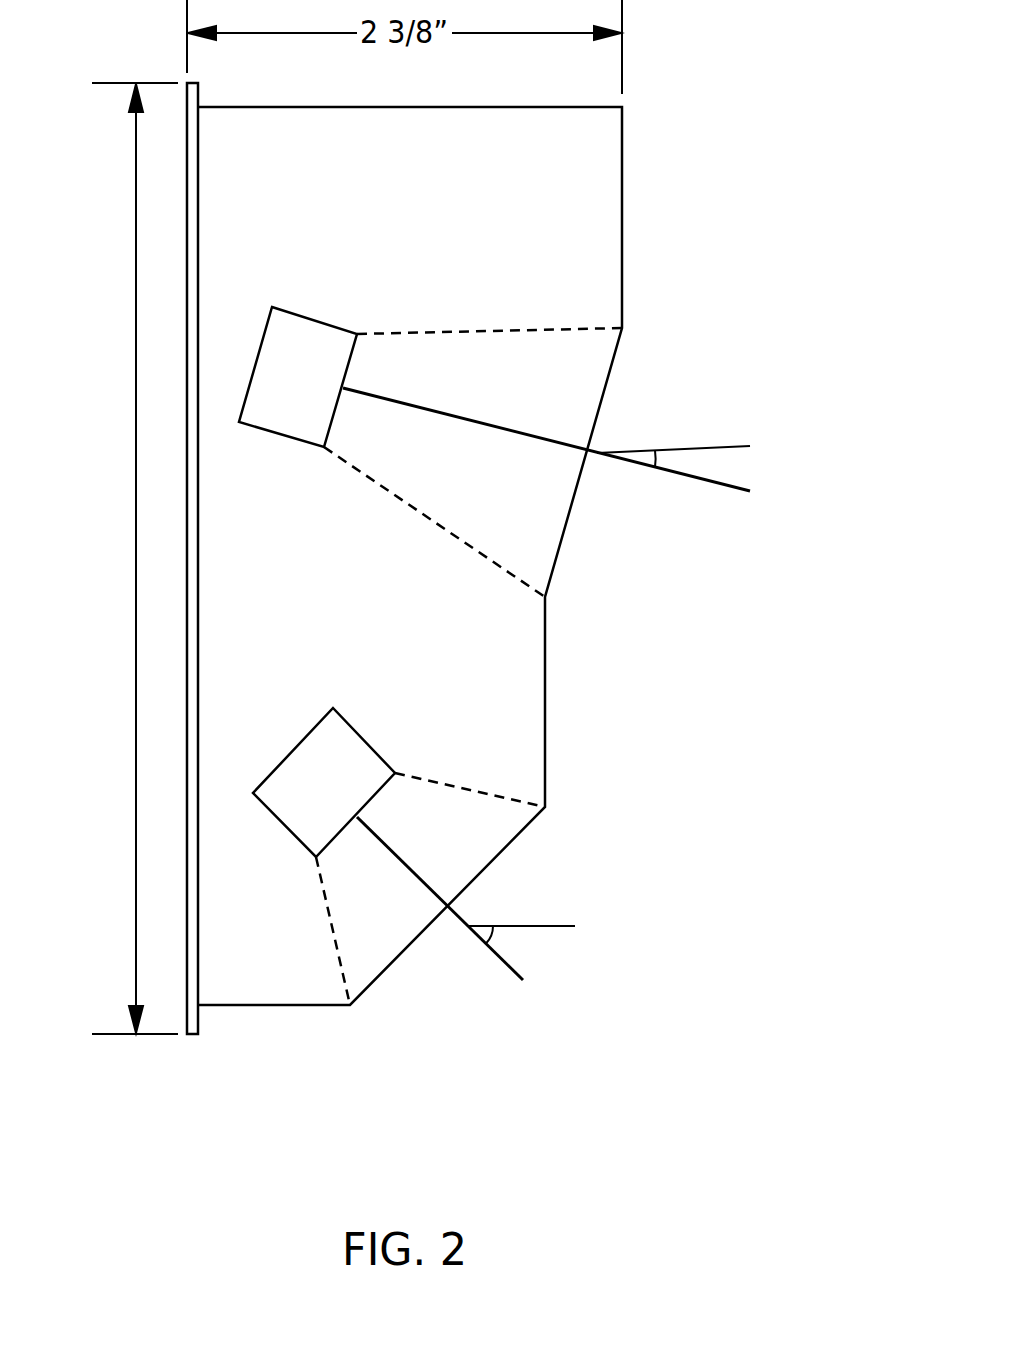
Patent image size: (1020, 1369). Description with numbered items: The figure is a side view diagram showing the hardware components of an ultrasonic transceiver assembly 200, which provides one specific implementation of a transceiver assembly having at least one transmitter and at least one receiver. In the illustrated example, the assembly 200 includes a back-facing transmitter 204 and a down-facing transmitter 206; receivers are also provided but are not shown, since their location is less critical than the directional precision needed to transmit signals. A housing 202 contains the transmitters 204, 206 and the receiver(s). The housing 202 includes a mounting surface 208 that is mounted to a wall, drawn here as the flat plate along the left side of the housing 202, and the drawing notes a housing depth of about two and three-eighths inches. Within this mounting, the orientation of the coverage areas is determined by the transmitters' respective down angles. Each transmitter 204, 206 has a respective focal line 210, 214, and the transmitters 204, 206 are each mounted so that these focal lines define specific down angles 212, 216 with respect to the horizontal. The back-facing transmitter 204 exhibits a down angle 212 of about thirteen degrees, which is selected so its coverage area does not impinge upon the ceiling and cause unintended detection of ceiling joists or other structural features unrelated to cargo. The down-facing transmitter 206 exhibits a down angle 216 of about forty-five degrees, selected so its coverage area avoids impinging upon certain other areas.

The transceiver assembly 200 is at (853, 1067).
The housing 202 is at (622, 181).
The back-facing transmitter 204 is at (295, 312).
The down-facing transmitter 206 is at (333, 708).
The mounting surface 208 is at (187, 428).
The focal line 210 is at (467, 417).
The down angle 212 is at (655, 467).
The focal line 214 is at (392, 843).
The down angle 216 is at (490, 945).